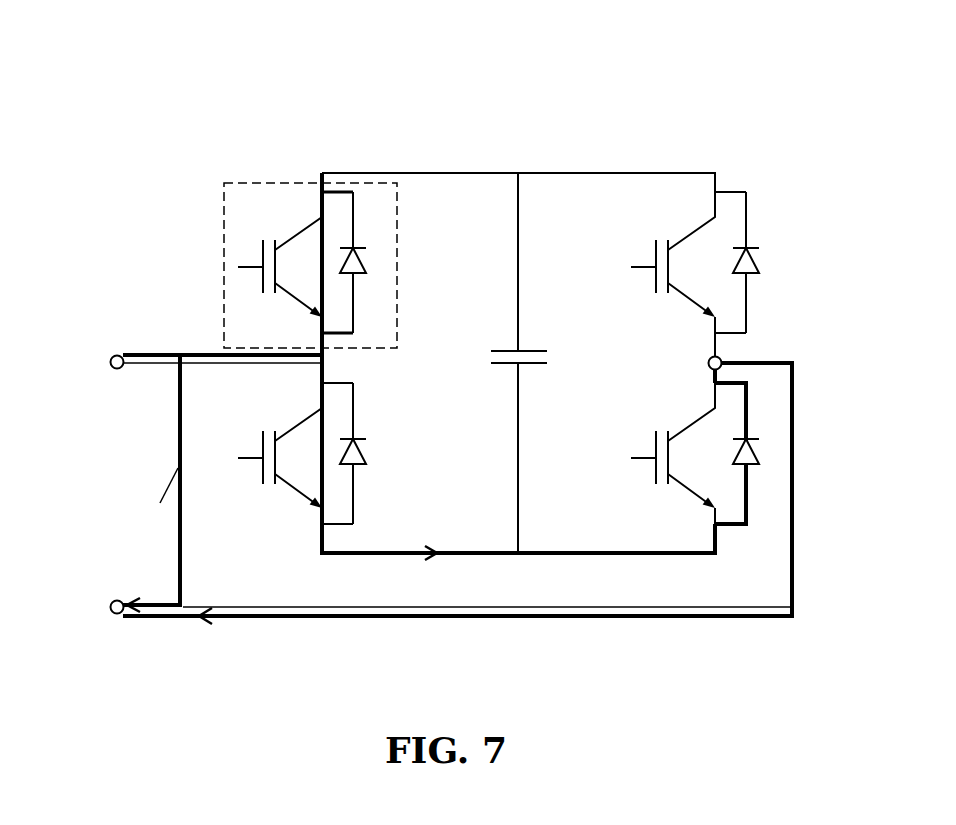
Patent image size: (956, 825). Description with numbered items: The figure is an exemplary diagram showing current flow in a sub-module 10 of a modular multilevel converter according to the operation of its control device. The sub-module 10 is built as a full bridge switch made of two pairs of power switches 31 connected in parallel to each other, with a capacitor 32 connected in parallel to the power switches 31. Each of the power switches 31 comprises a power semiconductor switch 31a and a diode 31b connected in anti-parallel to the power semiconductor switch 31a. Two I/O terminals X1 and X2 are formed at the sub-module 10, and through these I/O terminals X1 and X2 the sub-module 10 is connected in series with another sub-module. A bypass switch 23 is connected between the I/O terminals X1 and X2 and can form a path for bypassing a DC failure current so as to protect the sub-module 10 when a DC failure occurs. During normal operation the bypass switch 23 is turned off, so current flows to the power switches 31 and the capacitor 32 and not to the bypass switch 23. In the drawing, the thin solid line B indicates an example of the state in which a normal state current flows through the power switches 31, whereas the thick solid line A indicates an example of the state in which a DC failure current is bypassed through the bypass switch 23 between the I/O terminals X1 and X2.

The sub-module 10 is at (506, 114).
The power switches 31 is at (224, 204).
The power semiconductor switch 31a is at (294, 236).
The diode 31b is at (361, 247).
The capacitor 32 is at (533, 350).
The bypass switch 23 is at (166, 483).
The I/O terminal X1 is at (100, 360).
The I/O terminal X2 is at (100, 605).
The thick solid line A is at (157, 617).
The thin solid line B is at (233, 620).